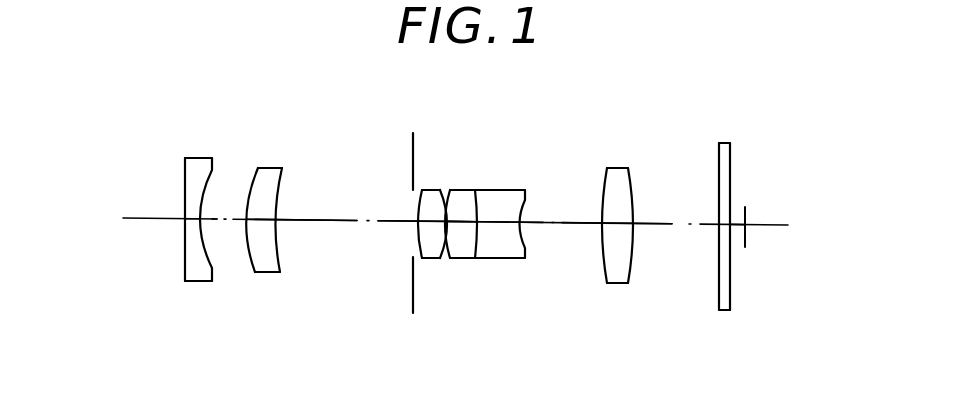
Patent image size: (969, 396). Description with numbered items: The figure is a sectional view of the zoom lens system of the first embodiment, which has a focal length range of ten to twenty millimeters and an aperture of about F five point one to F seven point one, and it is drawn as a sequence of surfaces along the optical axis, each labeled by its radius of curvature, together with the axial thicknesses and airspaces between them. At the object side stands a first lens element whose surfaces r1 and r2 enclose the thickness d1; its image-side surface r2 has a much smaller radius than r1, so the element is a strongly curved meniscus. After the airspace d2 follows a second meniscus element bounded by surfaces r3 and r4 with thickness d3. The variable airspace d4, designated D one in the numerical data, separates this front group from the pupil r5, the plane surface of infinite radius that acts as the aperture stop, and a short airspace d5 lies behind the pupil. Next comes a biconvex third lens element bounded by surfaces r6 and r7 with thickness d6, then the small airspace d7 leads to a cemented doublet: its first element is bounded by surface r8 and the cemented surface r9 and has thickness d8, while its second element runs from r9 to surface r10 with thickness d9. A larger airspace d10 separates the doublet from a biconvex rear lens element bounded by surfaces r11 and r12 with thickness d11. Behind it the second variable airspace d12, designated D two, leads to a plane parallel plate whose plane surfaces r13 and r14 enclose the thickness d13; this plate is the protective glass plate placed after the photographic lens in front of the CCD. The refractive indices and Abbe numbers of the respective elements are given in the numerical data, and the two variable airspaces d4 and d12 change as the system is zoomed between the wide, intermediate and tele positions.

The radius of curvature of first surface r1 is at (185, 175).
The radius of curvature of second surface r2 is at (205, 185).
The radius of curvature of third surface r3 is at (254, 188).
The radius of curvature of fourth surface r4 is at (283, 193).
The pupil surface r5 is at (413, 155).
The radius of curvature of sixth surface r6 is at (423, 190).
The radius of curvature of seventh surface r7 is at (442, 192).
The radius of curvature of eighth surface r8 is at (450, 192).
The radius of curvature of ninth surface r9 is at (477, 200).
The radius of curvature of tenth surface r10 is at (521, 200).
The radius of curvature of eleventh surface r11 is at (605, 195).
The radius of curvature of twelfth surface r12 is at (631, 192).
The radius of curvature of thirteenth surface r13 is at (719, 168).
The radius of curvature of fourteenth surface r14 is at (730, 168).
The thickness of first lens element d1 is at (186, 219).
The airspace between first and second lens elements d2 is at (217, 219).
The thickness of second lens element d3 is at (265, 220).
The variable airspace D1 d4 is at (325, 222).
The airspace after pupil d5 is at (418, 222).
The thickness of third lens element d6 is at (442, 224).
The airspace between third lens element and cemented doublet d7 is at (447, 228).
The thickness of fourth lens element d8 is at (462, 228).
The thickness of fifth lens element d9 is at (503, 227).
The airspace between cemented doublet and sixth lens element d10 is at (565, 226).
The thickness of sixth lens element d11 is at (617, 226).
The variable airspace D2 d12 is at (672, 226).
The thickness of plane parallel plate d13 is at (722, 227).